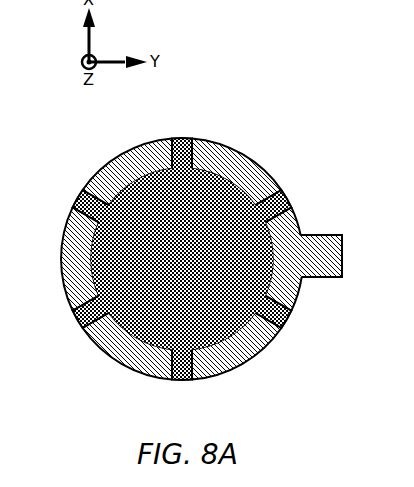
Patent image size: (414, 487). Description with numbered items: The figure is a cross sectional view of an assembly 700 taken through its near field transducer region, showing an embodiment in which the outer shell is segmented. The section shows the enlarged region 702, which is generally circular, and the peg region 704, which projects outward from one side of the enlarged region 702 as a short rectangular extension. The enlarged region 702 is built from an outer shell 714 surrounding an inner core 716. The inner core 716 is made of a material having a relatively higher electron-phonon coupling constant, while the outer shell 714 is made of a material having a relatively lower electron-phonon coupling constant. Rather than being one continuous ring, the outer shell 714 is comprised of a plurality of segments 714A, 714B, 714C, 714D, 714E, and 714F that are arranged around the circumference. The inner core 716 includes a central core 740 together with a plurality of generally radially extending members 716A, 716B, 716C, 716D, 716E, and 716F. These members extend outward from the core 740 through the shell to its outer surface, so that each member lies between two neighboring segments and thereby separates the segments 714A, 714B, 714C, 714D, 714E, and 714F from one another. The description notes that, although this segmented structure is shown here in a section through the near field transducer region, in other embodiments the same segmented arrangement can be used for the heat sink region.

The assembly 700 is at (191, 252).
The enlarged region 702 is at (88, 157).
The peg region 704 is at (344, 237).
The outer shell 714 is at (188, 269).
The segment 714A is at (255, 172).
The segment 714B is at (287, 286).
The segment 714C is at (239, 359).
The segment 714D is at (117, 354).
The segment 714E is at (70, 266).
The segment 714F is at (125, 157).
The inner core 716 is at (215, 197).
The radially extending member 716A is at (284, 202).
The radially extending member 716B is at (280, 322).
The radially extending member 716C is at (182, 374).
The radially extending member 716D is at (82, 322).
The radially extending member 716E is at (85, 200).
The radially extending member 716F is at (187, 143).
The core 740 is at (148, 296).